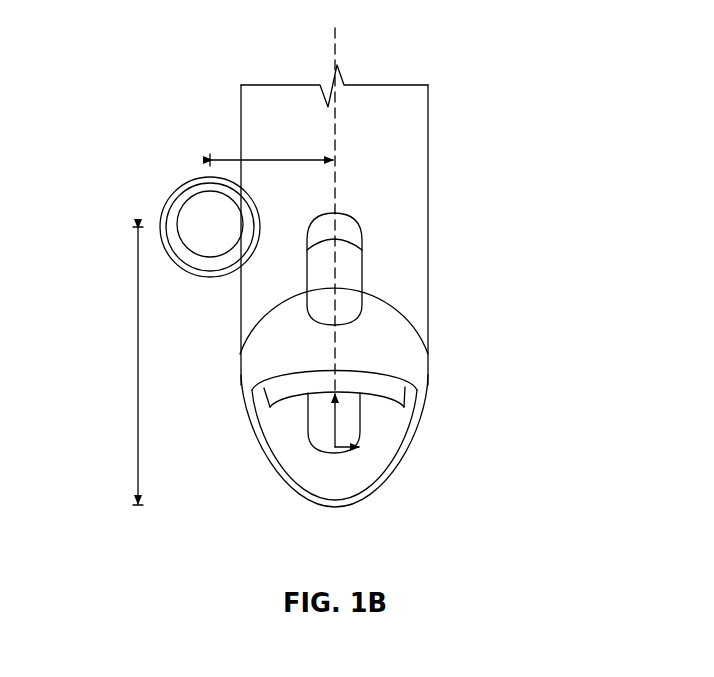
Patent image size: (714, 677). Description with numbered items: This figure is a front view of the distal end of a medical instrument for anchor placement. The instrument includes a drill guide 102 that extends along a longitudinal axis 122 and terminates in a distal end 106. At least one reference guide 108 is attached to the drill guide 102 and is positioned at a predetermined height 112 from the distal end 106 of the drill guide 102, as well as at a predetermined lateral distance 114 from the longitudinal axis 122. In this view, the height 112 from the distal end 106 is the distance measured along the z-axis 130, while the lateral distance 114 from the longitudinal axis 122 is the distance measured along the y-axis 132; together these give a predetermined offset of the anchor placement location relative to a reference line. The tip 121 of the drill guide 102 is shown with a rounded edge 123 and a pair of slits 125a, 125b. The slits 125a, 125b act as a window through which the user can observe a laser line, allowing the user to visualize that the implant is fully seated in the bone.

The drill guide 102 is at (407, 145).
The distal end 106 is at (353, 503).
The reference guide 108 is at (180, 192).
The predetermined height 112 is at (138, 365).
The predetermined lateral distance 114 is at (262, 158).
The tip 121 is at (448, 372).
The longitudinal axis 122 is at (336, 50).
The rounded edge 123 is at (270, 456).
The slit 125a is at (362, 272).
The slit 125b is at (363, 427).
The z-axis 130 is at (335, 415).
The y-axis 132 is at (347, 453).